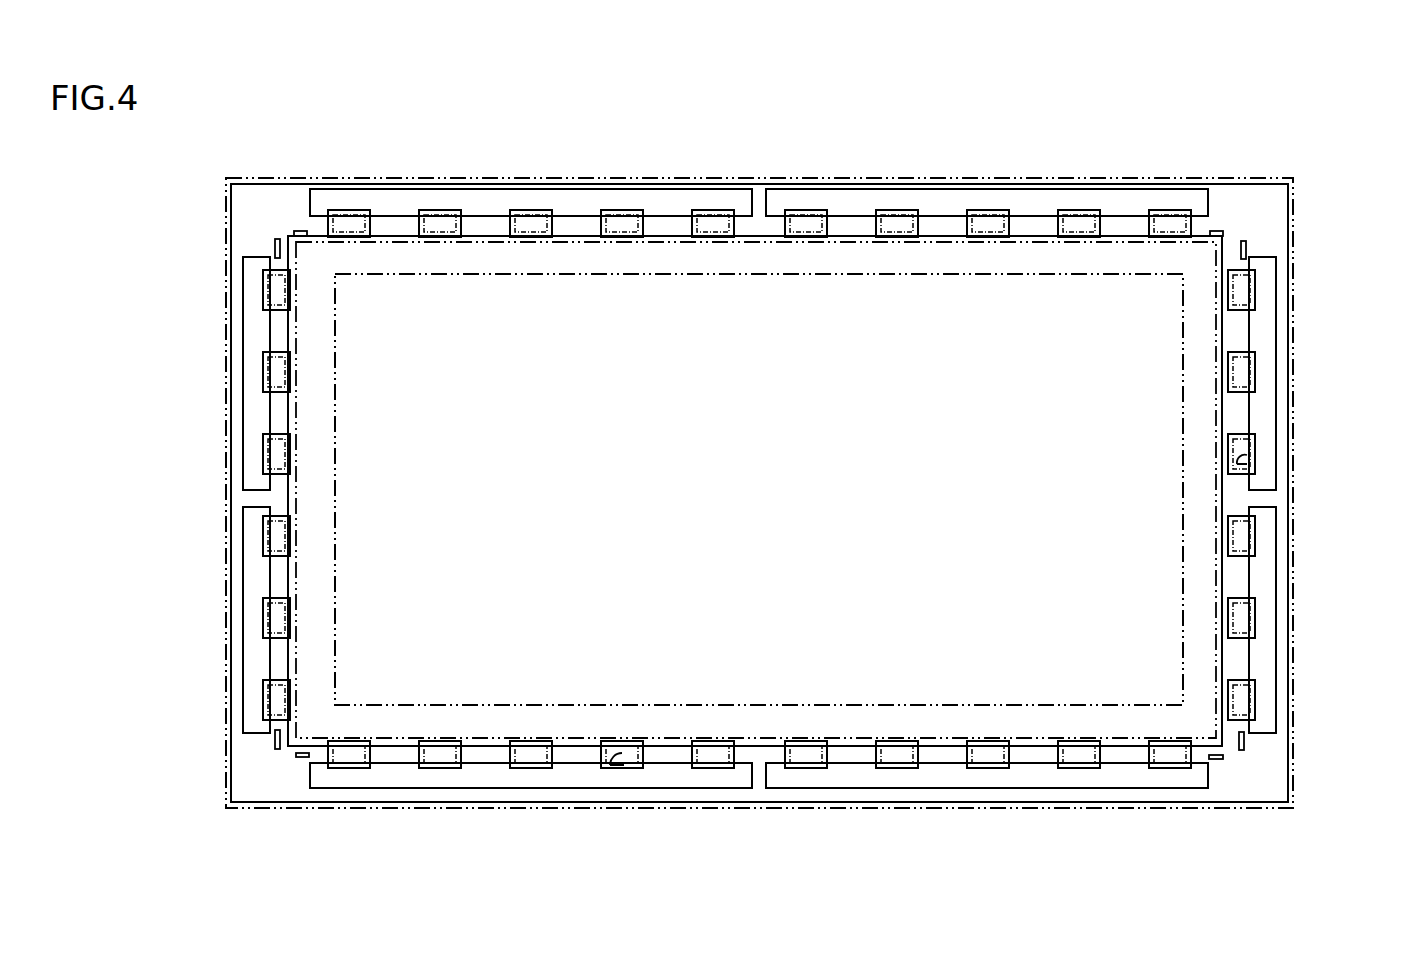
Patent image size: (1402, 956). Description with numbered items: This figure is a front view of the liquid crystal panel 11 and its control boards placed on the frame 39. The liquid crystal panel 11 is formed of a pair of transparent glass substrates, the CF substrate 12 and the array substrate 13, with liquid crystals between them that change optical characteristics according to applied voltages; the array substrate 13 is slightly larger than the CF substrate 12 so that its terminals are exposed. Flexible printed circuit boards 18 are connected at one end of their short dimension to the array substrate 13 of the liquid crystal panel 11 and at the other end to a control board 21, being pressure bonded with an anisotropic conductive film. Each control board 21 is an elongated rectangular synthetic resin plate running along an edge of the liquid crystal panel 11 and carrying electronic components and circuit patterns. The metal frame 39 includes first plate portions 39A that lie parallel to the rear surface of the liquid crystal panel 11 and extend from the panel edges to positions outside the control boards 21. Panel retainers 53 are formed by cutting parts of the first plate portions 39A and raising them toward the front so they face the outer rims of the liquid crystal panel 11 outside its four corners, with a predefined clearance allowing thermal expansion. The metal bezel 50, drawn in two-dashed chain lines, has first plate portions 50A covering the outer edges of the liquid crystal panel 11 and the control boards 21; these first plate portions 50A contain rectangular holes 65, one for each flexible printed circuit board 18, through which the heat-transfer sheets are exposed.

The liquid crystal panel 11 is at (668, 330).
The CF substrate 12 is at (753, 313).
The array substrate 13 is at (845, 243).
The flexible printed circuit board 18 is at (442, 227).
The control board 21 is at (570, 202).
The frame 39 is at (267, 208).
The first plate portion 39A is at (250, 218).
The bezel 50 is at (1242, 207).
The first plate portion 50A is at (1262, 214).
The panel retainer 53 is at (1218, 758).
The hole 65 is at (622, 766).